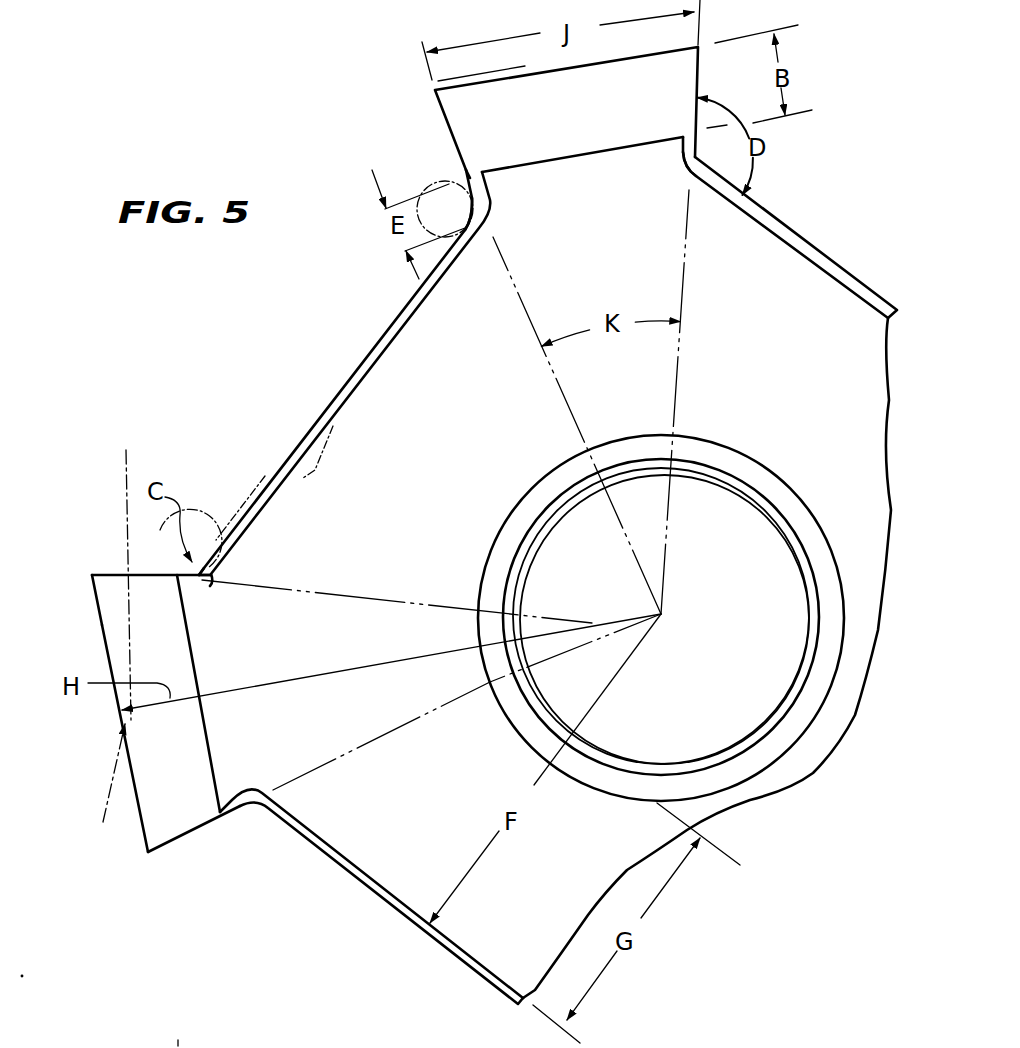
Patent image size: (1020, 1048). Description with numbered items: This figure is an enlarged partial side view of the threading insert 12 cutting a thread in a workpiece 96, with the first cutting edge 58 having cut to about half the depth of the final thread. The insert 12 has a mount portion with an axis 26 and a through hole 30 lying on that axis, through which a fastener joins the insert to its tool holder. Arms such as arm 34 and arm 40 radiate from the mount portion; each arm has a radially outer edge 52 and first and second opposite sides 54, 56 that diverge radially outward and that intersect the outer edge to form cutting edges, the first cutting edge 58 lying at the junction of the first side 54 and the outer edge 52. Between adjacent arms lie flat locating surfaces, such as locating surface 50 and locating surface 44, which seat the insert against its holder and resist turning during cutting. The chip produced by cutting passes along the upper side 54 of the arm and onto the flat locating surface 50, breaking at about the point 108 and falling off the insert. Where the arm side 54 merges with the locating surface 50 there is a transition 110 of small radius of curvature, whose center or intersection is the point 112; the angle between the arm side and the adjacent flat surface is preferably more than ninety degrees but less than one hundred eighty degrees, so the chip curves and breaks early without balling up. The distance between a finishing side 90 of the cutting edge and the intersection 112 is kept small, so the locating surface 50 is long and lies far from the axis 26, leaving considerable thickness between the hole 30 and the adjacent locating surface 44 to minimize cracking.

The threading insert 12 is at (380, 340).
The axis 26 is at (661, 614).
The through hole 30 is at (765, 718).
The arm 34 is at (127, 758).
The arm 40 is at (437, 90).
The locating surface 44 is at (367, 887).
The locating surface 50 is at (344, 388).
The radially outer edge 52 is at (140, 836).
The first side 54 is at (140, 573).
The second side 56 is at (160, 851).
The first cutting edge 58 is at (130, 560).
The finishing side 90 is at (470, 160).
The workpiece 96 is at (126, 450).
The point 108 is at (325, 428).
The transition 110 is at (208, 555).
The point 112 is at (479, 204).